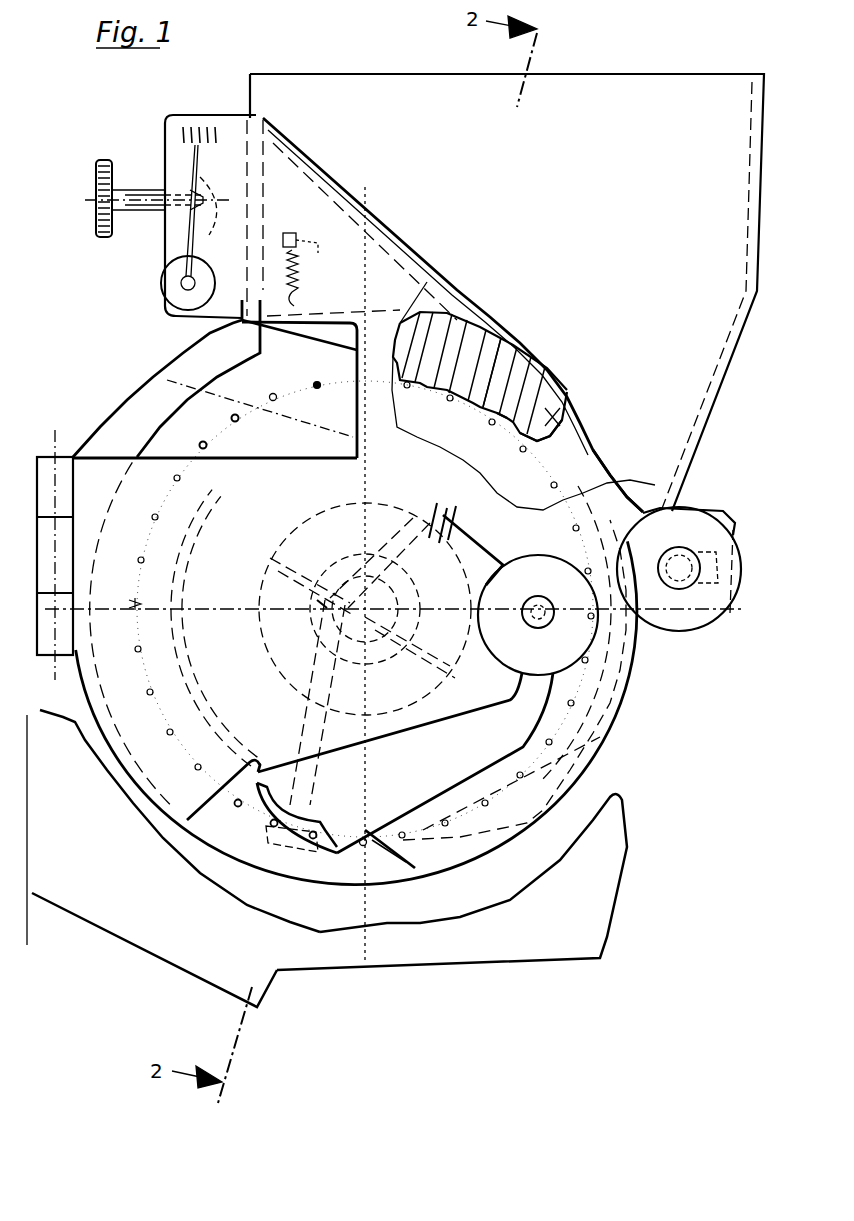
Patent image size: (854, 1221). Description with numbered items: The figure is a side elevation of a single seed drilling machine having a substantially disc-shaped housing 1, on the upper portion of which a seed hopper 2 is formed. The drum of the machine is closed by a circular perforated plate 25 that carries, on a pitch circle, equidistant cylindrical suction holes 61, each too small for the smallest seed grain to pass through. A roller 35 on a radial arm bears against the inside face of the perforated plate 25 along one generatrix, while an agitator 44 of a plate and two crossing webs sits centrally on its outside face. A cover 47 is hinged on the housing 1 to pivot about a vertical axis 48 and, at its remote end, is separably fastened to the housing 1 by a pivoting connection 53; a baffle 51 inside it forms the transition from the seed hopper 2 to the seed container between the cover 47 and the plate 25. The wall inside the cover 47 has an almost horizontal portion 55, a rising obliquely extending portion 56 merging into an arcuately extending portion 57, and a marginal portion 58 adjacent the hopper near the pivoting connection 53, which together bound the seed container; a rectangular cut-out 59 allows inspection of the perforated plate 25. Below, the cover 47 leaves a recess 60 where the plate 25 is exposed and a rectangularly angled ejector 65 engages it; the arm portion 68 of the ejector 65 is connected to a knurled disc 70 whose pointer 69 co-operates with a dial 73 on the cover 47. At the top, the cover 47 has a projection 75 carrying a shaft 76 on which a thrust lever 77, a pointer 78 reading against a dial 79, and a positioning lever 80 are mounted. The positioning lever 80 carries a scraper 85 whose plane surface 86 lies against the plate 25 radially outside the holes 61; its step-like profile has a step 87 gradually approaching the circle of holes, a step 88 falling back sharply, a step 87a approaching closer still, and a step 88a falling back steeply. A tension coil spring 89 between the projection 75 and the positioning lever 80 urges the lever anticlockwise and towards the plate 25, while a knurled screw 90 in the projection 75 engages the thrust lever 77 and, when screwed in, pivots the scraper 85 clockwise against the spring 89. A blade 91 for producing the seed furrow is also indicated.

The housing 1 is at (262, 410).
The seed hopper 2 is at (576, 100).
The perforated plate 25 is at (183, 421).
The roller 35 is at (300, 850).
The agitator 44 is at (368, 636).
The cover 47 is at (600, 700).
The vertical axis 48 is at (57, 457).
The baffle 51 is at (560, 502).
The pivoting connection 53 is at (704, 506).
The horizontal portion 55 is at (498, 837).
The obliquely extending portion 56 is at (370, 837).
The arcuately extending portion 57 is at (170, 627).
The marginal portion 58 is at (640, 676).
The rectangular cut-out 59 is at (167, 380).
The recess 60 is at (250, 765).
The suction holes 61 is at (274, 397).
The ejector 65 is at (487, 767).
The arm portion 68 is at (482, 745).
The pointer 69 is at (455, 530).
The knurled disc 70 is at (597, 630).
The dial 73 is at (440, 510).
The projection 75 is at (220, 115).
The shaft 76 is at (190, 282).
The thrust lever 77 is at (215, 242).
The pointer 78 is at (190, 226).
The dial 79 is at (208, 128).
The positioning lever 80 is at (352, 337).
The scraper 85 is at (577, 372).
The plane surface 86 is at (562, 437).
The step 87 is at (550, 420).
The step 87a is at (507, 408).
The step 88 is at (535, 389).
The step 88a is at (505, 398).
The tension coil spring 89 is at (292, 232).
The knurled screw 90 is at (100, 162).
The blade 91 is at (487, 940).